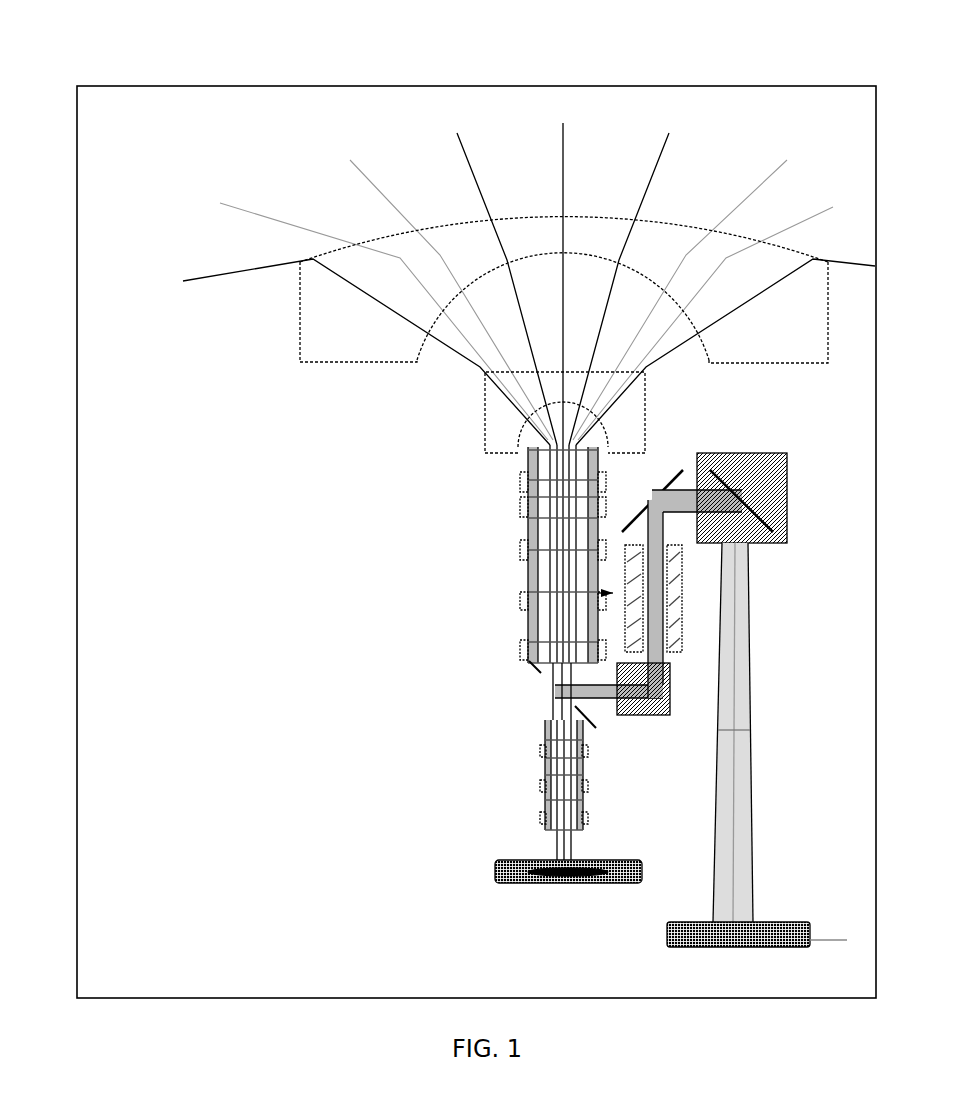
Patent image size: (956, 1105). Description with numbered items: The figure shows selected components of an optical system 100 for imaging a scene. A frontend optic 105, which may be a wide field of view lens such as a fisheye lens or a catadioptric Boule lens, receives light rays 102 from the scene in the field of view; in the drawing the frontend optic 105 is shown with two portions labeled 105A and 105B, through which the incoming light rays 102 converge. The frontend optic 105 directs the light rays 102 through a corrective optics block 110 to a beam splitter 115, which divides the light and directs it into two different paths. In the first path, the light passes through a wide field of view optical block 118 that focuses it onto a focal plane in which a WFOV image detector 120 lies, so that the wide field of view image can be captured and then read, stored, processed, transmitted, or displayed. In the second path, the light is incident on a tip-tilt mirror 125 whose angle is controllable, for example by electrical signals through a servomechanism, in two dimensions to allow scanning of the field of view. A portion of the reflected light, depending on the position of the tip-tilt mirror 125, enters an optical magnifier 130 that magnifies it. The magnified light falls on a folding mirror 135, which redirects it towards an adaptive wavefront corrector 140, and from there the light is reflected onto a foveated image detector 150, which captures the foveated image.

The optical system 100 is at (568, 35).
The light rays 102 is at (513, 281).
The frontend optic 105 is at (648, 416).
The first lens portion 105A is at (358, 312).
The second lens portion 105B is at (656, 357).
The corrective optics block 110 is at (519, 640).
The beam splitter 115 is at (540, 673).
The wide field of view (WFOV) optical block 118 is at (544, 780).
The WFOV image detector 120 is at (494, 868).
The tip-tilt mirror 125 is at (673, 696).
The optical magnifier 130 is at (684, 600).
The folding mirror 135 is at (660, 480).
The adaptive wavefront corrector 140 is at (789, 487).
The foveated image detector 150 is at (666, 937).